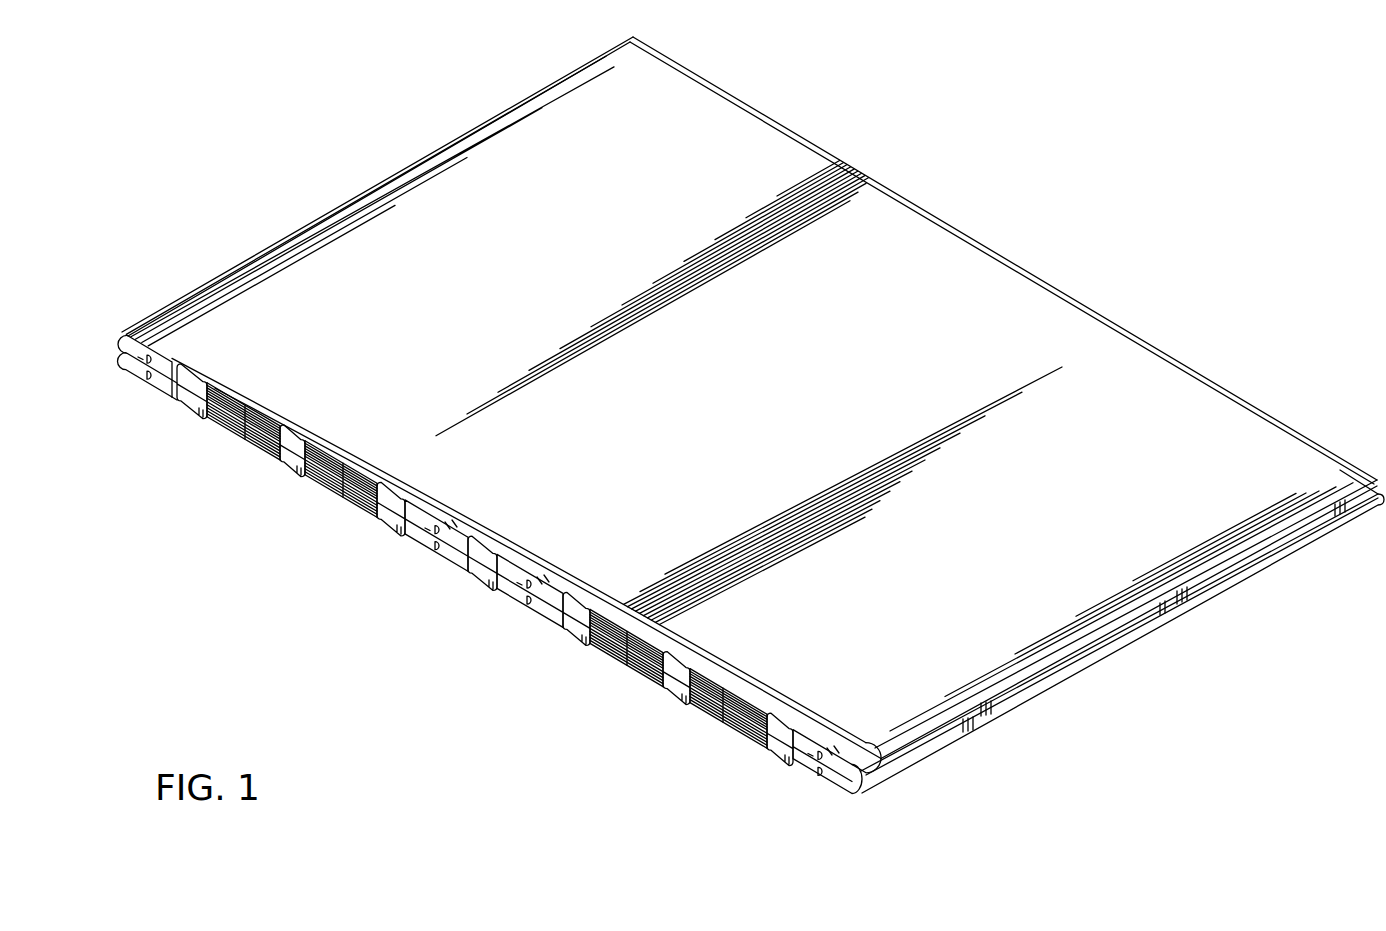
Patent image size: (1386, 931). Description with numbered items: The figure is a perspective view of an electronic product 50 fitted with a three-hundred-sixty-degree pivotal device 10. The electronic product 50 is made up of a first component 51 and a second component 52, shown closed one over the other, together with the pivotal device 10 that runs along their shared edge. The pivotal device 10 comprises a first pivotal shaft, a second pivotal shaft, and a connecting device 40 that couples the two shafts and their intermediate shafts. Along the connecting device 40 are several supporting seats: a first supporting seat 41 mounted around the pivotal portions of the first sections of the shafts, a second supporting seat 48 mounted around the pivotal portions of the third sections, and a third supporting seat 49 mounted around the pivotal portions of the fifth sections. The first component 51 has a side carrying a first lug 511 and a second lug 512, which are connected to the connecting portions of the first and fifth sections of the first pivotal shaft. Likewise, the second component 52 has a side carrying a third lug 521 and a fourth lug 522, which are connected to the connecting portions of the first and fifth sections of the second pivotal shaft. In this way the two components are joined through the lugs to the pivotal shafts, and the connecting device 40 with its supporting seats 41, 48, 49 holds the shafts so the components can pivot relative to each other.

The electronic product 50 is at (1092, 182).
The first component 51 is at (1184, 385).
The second component 52 is at (1262, 561).
The first lug 511 is at (887, 751).
The second lug 512 is at (512, 573).
The third lug 521 is at (810, 763).
The fourth lug 522 is at (540, 603).
The 360° pivotal device 10 is at (664, 738).
The connecting device 40 is at (707, 740).
The first supporting seat 41 is at (772, 741).
The second supporting seat 48 is at (675, 681).
The third supporting seat 49 is at (577, 621).